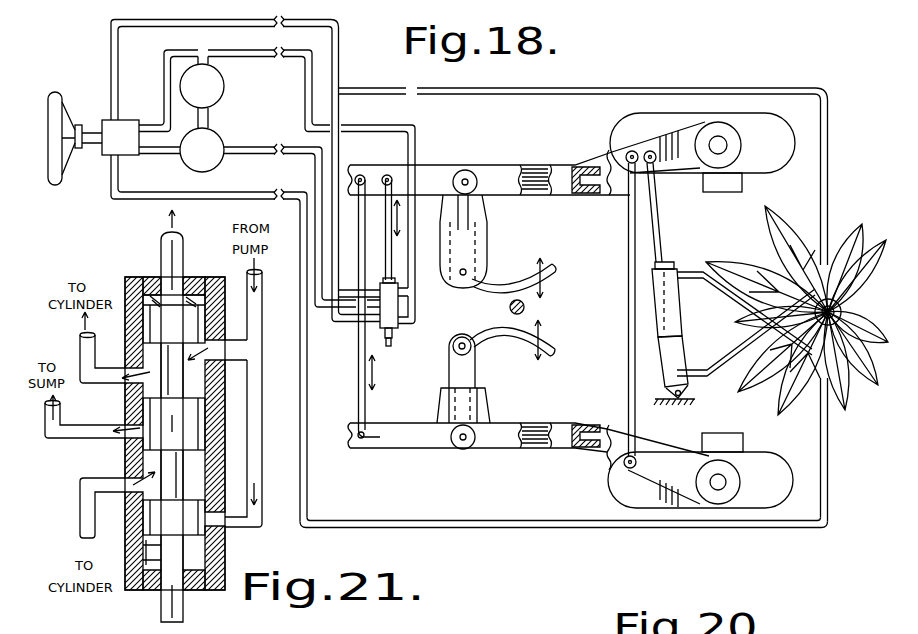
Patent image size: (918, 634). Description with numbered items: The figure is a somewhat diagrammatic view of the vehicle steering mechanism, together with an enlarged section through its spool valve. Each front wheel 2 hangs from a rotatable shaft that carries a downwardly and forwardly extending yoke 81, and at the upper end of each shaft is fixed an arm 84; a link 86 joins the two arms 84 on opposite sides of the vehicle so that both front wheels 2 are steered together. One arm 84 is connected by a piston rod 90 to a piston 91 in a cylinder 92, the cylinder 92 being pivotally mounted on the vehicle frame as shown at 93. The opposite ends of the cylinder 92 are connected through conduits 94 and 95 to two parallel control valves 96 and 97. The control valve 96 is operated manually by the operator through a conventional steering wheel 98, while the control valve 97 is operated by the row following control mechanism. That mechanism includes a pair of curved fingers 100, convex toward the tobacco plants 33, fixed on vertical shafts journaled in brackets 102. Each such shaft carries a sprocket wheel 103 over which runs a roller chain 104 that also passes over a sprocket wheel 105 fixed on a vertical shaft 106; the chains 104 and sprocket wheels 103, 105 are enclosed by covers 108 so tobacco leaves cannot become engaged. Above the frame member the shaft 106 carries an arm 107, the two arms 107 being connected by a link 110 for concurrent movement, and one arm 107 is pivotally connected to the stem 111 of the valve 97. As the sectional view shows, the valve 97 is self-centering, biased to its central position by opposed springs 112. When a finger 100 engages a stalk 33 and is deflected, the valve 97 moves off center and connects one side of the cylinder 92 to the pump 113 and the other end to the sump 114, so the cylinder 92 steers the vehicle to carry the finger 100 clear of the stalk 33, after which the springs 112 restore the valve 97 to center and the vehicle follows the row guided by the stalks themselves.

In FIG. 18, the front wheel 2 is at (795, 150).
In FIG. 18, the tobacco plant 33 is at (845, 312).
In FIG. 18, the yoke 81 is at (706, 194).
In FIG. 18, the arm 84 is at (680, 142).
In FIG. 18, the link 86 is at (628, 274).
In FIG. 18, the piston rod 90 is at (660, 222).
In FIG. 18, the piston 91 is at (688, 337).
In FIG. 18, the cylinder 92 is at (680, 309).
In FIG. 18, the pivotal mounting 93 is at (692, 396).
In FIG. 18, the conduit 94 is at (586, 89).
In FIG. 18, the conduit 95 is at (828, 497).
In FIG. 18, the control valve 96 is at (125, 118).
In FIG. 18, the control valve 97 is at (399, 306).
In FIG. 21, the control valve 97 is at (222, 437).
In FIG. 18, the steering wheel 98 is at (63, 82).
In FIG. 18, the finger 100 is at (513, 277).
In FIG. 18, the bracket 102 is at (479, 372).
In FIG. 18, the sprocket wheel 103 is at (453, 349).
In FIG. 18, the roller chain 104 is at (484, 210).
In FIG. 18, the sprocket wheel 105 is at (480, 406).
In FIG. 18, the vertical shaft 106 is at (472, 174).
In FIG. 18, the arm 107 is at (433, 176).
In FIG. 18, the cover 108 is at (489, 237).
In FIG. 18, the link 110 is at (366, 399).
In FIG. 18, the stem 111 is at (385, 250).
In FIG. 21, the stem 111 is at (162, 246).
In FIG. 21, the spring 112 is at (158, 292).
In FIG. 18, the pump 113 is at (225, 87).
In FIG. 18, the sump 114 is at (223, 131).